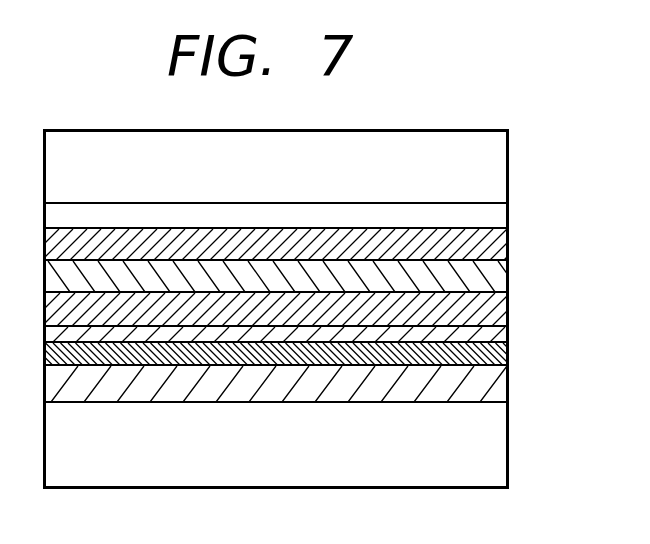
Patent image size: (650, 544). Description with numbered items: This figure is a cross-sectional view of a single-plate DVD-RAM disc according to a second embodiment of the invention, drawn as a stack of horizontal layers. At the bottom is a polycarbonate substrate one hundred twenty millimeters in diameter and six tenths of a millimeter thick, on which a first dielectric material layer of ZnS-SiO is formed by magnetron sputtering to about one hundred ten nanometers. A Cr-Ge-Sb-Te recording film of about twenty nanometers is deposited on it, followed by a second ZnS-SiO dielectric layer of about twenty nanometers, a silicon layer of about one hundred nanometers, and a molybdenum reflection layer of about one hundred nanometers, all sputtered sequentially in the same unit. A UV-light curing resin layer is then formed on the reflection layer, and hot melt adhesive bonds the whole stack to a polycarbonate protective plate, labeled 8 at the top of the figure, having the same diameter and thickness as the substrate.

The substrate 8 is at (494, 171).